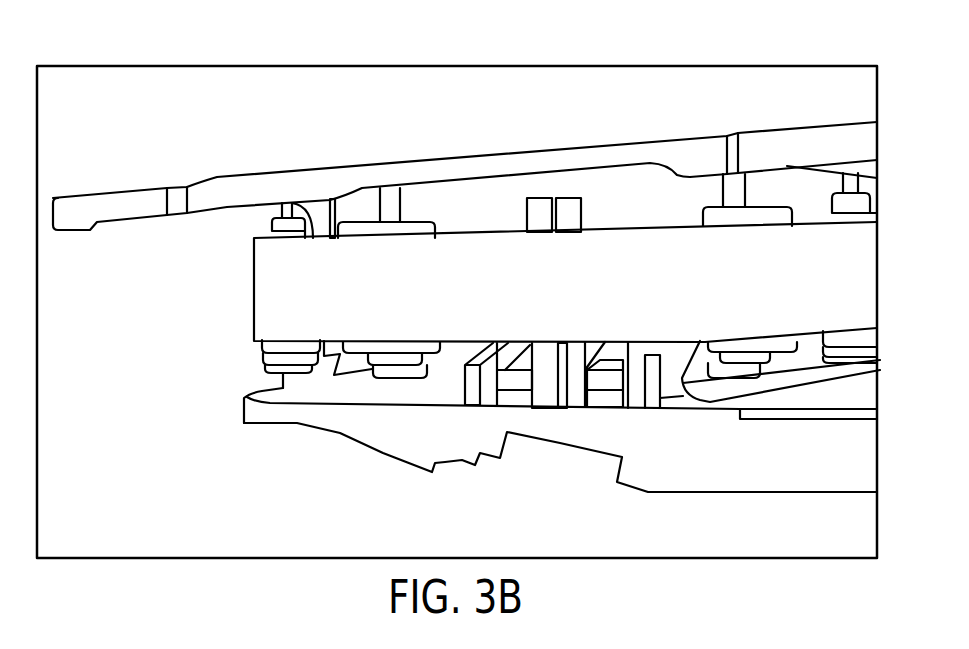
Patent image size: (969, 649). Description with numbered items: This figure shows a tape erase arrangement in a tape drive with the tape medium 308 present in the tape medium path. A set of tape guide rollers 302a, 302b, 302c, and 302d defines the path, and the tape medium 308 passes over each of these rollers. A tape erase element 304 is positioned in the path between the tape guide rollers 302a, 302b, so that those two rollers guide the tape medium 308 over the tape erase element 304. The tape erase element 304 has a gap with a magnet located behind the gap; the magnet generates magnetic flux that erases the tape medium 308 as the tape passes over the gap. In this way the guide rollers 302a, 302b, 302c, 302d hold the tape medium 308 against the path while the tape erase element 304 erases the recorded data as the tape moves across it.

The tape guide roller 302a is at (413, 227).
The tape guide roller 302b is at (758, 210).
The tape guide roller 302c is at (828, 217).
The tape guide roller 302d is at (263, 240).
The tape erase element 304 is at (537, 204).
The tape medium 308 is at (627, 273).